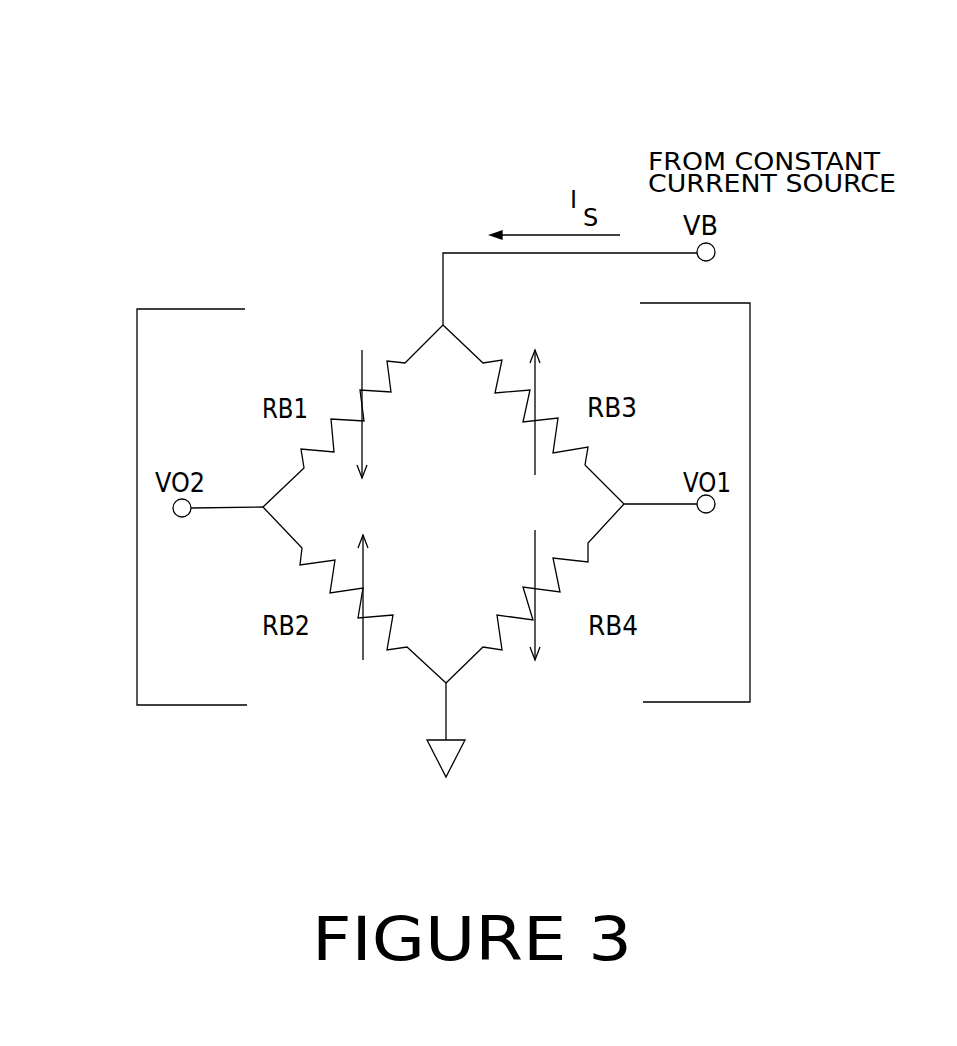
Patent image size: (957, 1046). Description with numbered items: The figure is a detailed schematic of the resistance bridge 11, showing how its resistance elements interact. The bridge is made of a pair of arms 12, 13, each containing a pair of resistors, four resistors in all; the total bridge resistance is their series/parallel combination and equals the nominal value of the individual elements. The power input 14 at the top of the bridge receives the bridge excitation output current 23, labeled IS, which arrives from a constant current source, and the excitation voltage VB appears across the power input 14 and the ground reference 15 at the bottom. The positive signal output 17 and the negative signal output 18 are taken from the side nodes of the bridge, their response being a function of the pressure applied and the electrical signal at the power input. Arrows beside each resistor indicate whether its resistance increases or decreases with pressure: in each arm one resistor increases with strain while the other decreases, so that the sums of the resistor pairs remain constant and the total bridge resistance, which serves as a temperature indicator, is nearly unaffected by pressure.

The resistance bridge 11 is at (443, 377).
The arm 12 is at (148, 308).
The arm 13 is at (750, 423).
The power input 14 is at (570, 289).
The ground reference 15 is at (447, 720).
The positive signal output 17 is at (220, 508).
The negative signal output 18 is at (661, 507).
The bridge excitation output current 23 is at (555, 220).